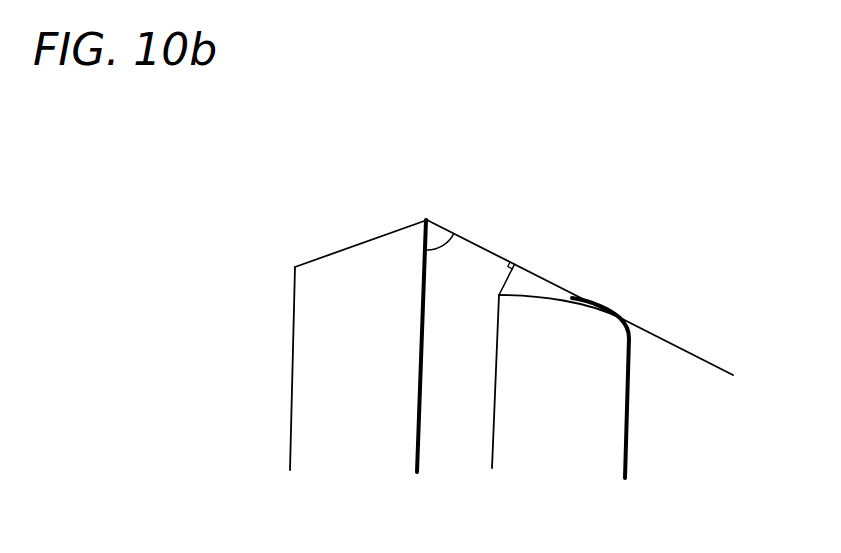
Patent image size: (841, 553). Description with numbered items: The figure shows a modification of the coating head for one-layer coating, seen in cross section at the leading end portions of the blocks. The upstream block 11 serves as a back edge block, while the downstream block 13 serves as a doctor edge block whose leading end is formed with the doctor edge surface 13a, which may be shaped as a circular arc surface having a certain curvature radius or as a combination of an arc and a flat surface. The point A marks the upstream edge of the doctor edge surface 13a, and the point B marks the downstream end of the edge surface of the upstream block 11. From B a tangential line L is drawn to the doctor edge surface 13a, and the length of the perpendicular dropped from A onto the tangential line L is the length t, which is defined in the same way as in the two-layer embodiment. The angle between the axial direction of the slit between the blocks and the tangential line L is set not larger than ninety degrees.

The block 11 is at (318, 363).
The block 13 is at (602, 433).
The upper-layer-side doctor edge surface 13a is at (538, 290).
The tangential line L is at (697, 355).
The downstream end B is at (427, 218).
The upstream edge A is at (499, 295).
The length of perpendicular t is at (504, 280).